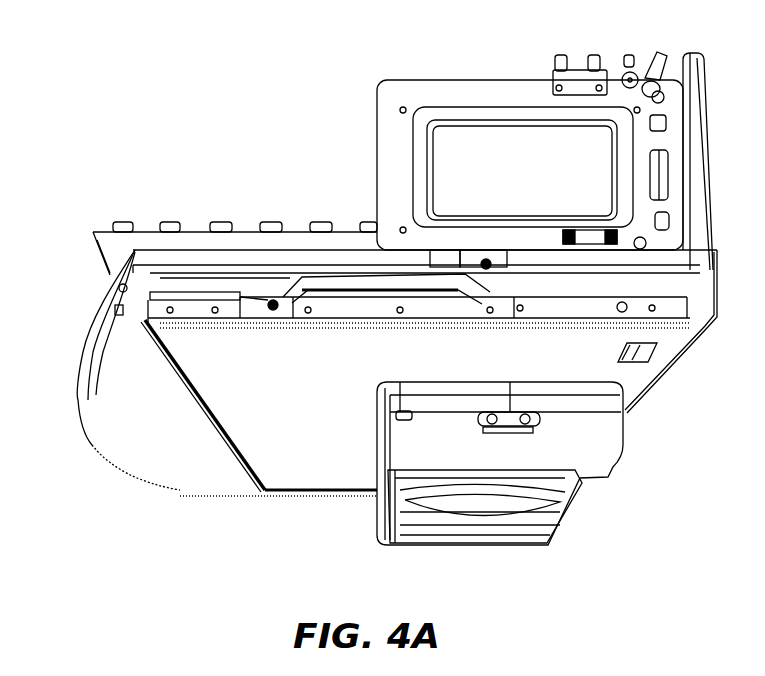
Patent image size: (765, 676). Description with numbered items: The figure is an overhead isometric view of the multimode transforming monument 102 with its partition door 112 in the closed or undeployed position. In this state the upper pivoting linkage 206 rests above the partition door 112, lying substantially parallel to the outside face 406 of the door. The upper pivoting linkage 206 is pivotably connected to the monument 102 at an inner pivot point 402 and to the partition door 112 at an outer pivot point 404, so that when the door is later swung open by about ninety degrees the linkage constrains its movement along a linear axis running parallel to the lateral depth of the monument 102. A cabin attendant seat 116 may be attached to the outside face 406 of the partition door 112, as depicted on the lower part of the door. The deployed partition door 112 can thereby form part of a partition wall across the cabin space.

The multimode transforming monument 102 is at (88, 85).
The partition door 112 is at (322, 472).
The cabin attendant seat 116 is at (503, 448).
The upper pivoting linkage 206 is at (345, 283).
The inner pivot point 402 is at (485, 260).
The outer pivot point 404 is at (270, 302).
The outside face 406 is at (265, 400).